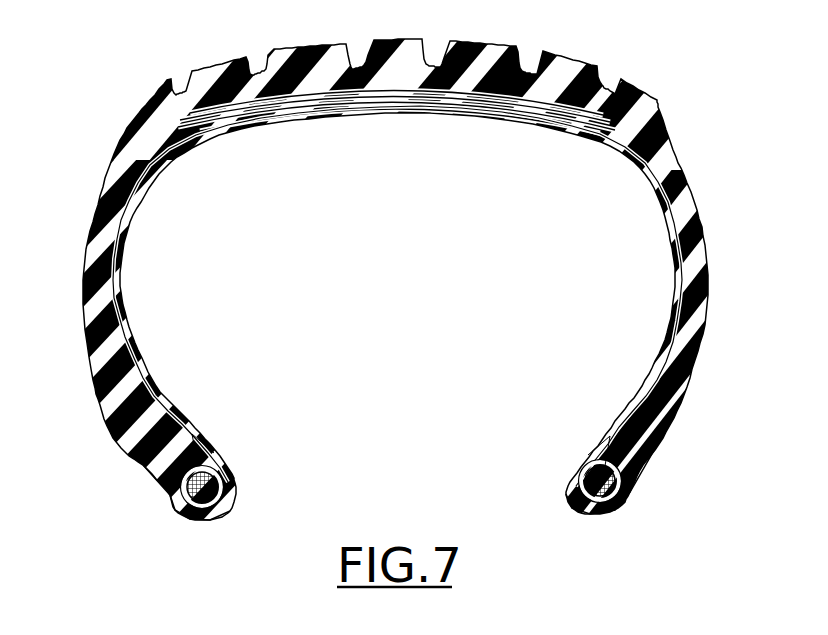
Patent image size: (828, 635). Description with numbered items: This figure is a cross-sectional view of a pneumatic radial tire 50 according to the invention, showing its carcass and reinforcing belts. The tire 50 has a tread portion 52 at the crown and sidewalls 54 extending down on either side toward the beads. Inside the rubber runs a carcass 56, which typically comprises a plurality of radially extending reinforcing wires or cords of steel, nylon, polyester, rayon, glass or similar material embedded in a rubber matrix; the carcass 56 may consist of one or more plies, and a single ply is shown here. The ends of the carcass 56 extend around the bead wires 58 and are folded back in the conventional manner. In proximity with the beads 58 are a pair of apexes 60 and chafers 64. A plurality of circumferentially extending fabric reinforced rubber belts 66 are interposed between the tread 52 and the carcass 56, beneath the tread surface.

The radial tire 50 is at (694, 53).
The tread portion 52 is at (407, 51).
The sidewalls 54 is at (112, 172).
The carcass 56 is at (157, 181).
The bead wires 58 is at (220, 492).
The apexes 60 is at (188, 443).
The chafers 64 is at (150, 456).
The belts 66 is at (423, 97).